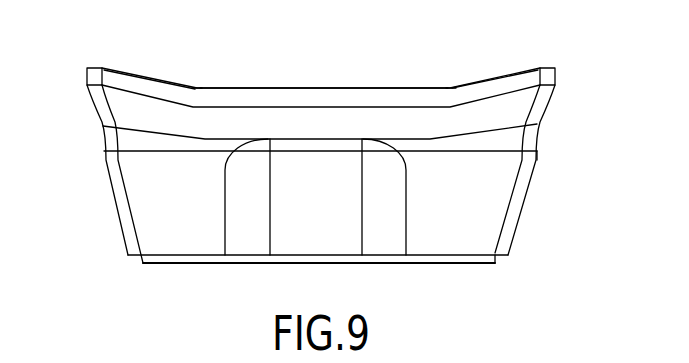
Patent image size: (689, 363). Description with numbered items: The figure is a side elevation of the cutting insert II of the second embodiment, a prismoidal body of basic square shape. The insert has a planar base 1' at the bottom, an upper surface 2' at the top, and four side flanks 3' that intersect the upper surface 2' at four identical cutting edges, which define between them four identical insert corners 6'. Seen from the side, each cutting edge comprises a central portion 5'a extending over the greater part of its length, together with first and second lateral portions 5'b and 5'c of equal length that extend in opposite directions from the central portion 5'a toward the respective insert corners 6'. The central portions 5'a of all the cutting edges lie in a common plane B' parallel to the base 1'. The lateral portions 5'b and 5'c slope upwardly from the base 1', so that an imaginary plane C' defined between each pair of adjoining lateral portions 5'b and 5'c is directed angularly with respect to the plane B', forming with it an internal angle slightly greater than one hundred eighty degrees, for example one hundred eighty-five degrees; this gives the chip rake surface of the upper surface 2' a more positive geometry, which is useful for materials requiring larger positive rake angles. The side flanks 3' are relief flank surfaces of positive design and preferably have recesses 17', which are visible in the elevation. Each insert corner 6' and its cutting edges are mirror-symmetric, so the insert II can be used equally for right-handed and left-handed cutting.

The planar base 1' is at (324, 278).
The upper surface 2' is at (321, 57).
The side flanks 3' is at (328, 174).
The central portion of cutting edge 5'a is at (324, 55).
The first lateral portion of cutting edge 5'b is at (149, 54).
The second lateral portion of cutting edge 5'c is at (495, 50).
The insert corner 6' is at (315, 47).
The recess 17' is at (348, 197).
The common plane B' is at (213, 48).
The imaginary plane C' is at (448, 47).
The cutting insert II is at (558, 146).